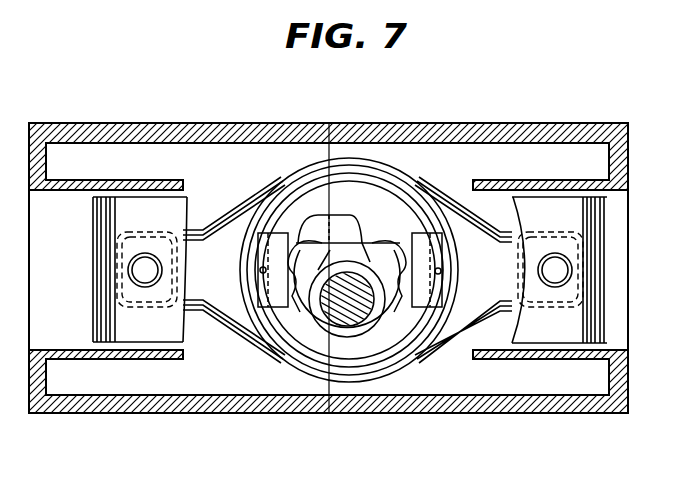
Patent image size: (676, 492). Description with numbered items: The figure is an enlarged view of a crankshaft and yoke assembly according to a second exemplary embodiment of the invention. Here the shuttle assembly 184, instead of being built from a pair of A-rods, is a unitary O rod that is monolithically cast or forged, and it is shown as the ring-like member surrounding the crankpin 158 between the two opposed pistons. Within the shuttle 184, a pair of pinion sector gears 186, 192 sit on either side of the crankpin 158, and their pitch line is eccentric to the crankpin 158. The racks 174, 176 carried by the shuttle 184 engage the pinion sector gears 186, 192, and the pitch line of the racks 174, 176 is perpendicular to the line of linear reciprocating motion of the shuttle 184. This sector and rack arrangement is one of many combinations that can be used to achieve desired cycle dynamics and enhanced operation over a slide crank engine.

The crankpin 158 is at (344, 322).
The rack 174 is at (446, 336).
The rack 176 is at (260, 334).
The shuttle assembly 184 is at (360, 147).
The pinion sector gear 186 is at (389, 230).
The pinion sector gear 192 is at (293, 236).